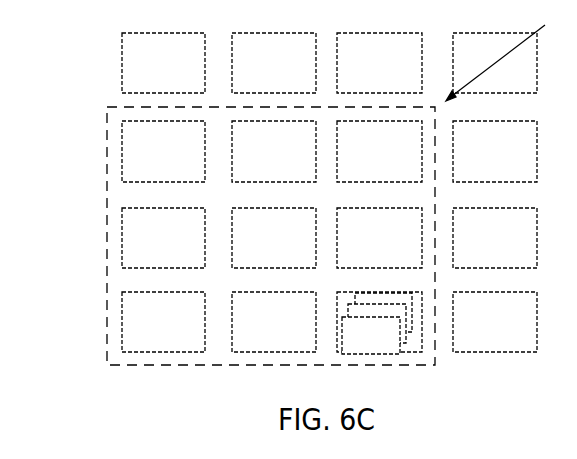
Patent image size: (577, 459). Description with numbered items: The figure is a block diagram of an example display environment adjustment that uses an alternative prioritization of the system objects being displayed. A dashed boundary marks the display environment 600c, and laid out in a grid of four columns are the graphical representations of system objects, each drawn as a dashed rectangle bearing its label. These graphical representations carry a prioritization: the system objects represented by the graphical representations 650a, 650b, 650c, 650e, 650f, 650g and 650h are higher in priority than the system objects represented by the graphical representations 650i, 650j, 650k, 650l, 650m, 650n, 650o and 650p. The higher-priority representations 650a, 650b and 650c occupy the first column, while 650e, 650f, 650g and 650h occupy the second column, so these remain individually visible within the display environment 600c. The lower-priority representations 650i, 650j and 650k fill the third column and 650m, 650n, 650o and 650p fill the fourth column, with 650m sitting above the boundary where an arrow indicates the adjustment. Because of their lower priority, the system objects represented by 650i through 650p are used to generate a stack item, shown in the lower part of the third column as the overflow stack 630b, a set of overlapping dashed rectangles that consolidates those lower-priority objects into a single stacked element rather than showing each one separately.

The display region / user interface 600c is at (142, 367).
The overflow stack 630b is at (372, 335).
The graphical representation 650a is at (163, 63).
The graphical representation 650b is at (163, 151).
The graphical representation 650c is at (163, 238).
The graphical representation 650e is at (274, 63).
The graphical representation 650f is at (274, 151).
The graphical representation 650g is at (274, 238).
The graphical representation 650h is at (274, 322).
The graphical representation 650i is at (379, 63).
The graphical representation 650j is at (379, 151).
The graphical representation 650k is at (379, 238).
The graphical representation 650l is at (424, 301).
The graphical representation 650m is at (495, 63).
The graphical representation 650n is at (495, 151).
The graphical representation 650o is at (495, 238).
The graphical representation 650p is at (495, 322).